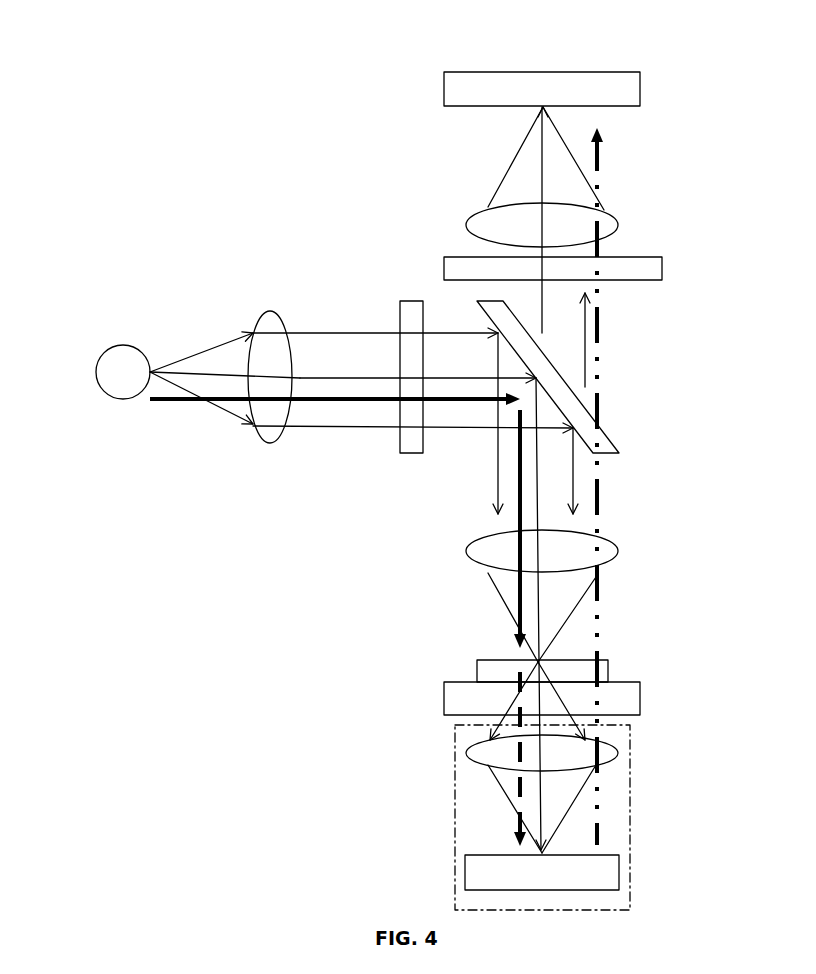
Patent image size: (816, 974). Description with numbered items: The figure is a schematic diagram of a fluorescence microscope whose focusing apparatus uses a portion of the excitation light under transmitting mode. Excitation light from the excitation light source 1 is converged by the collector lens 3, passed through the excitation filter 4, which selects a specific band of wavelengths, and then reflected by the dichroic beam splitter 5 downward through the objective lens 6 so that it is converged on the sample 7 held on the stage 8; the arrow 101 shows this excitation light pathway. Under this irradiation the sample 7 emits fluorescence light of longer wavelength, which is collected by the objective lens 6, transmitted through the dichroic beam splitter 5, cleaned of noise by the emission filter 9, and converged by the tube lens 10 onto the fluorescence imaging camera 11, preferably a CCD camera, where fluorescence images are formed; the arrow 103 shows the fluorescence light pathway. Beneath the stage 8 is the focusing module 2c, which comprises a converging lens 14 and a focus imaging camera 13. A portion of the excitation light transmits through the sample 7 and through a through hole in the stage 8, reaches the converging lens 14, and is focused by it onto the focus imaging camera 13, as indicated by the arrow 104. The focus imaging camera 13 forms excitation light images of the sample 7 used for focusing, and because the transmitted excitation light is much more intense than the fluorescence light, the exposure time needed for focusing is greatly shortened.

The excitation light source 1 is at (122, 386).
The collector lens 3 is at (272, 334).
The excitation filter 4 is at (412, 450).
The dichroic beam splitter 5 is at (606, 444).
The objective lens 6 is at (606, 552).
The sample 7 is at (610, 667).
The stage 8 is at (632, 701).
The emission filter 9 is at (642, 268).
The tube lens 10 is at (606, 226).
The fluorescence imaging camera 11 is at (545, 96).
The focus imaging camera 13 is at (606, 870).
The converging lens 14 is at (608, 757).
The focusing module 2c is at (455, 838).
The arrow showing the pathway of the excitation light 101 is at (332, 400).
The arrow showing the pathway of the fluorescence light 103 is at (600, 322).
The arrow showing the pathway of the portion of the excitation light 104 is at (520, 805).